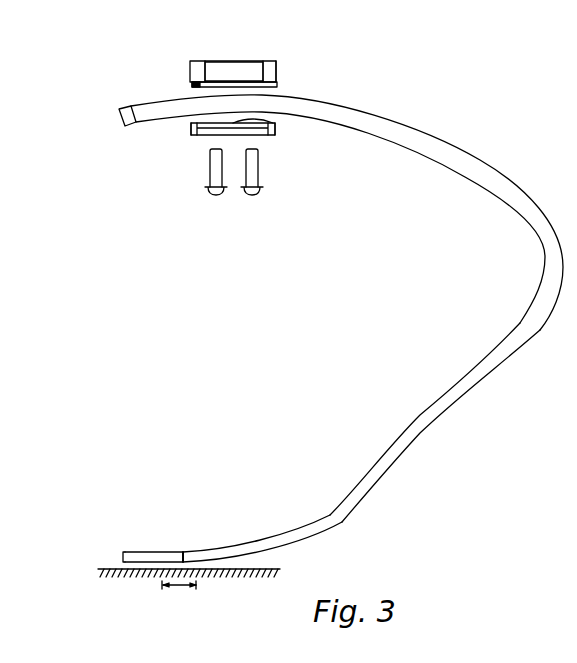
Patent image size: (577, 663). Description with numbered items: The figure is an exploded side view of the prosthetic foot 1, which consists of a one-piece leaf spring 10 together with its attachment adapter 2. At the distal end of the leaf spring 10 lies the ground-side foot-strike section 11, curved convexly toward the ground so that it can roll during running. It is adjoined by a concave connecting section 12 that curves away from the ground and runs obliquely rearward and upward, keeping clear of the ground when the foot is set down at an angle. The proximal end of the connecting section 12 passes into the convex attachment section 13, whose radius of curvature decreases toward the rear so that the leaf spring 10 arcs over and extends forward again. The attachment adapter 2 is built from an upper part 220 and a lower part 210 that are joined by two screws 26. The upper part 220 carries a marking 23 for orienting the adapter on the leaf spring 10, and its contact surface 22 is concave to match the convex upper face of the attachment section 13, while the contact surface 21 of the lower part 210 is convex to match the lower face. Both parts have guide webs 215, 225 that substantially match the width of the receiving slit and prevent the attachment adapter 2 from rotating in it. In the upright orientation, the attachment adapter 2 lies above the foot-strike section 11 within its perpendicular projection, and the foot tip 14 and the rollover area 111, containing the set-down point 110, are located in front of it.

The prosthetic foot 1 is at (496, 137).
The leaf spring 10 is at (119, 112).
The foot-strike section 11 is at (278, 497).
The connecting section 12 is at (424, 376).
The attachment section 13 is at (419, 186).
The foot tip 14 is at (122, 553).
The set-down point 110 is at (178, 565).
The rollover area 111 is at (181, 589).
The attachment adapter 2 is at (277, 50).
The contact surface of the lower part 21 is at (272, 120).
The contact surface of the upper part 22 is at (193, 86).
The marking 23 is at (233, 78).
The lower part 210 is at (263, 136).
The guide web 215 is at (186, 127).
The upper part 220 is at (280, 68).
The guide web 225 is at (275, 83).
The screws 26 is at (209, 196).